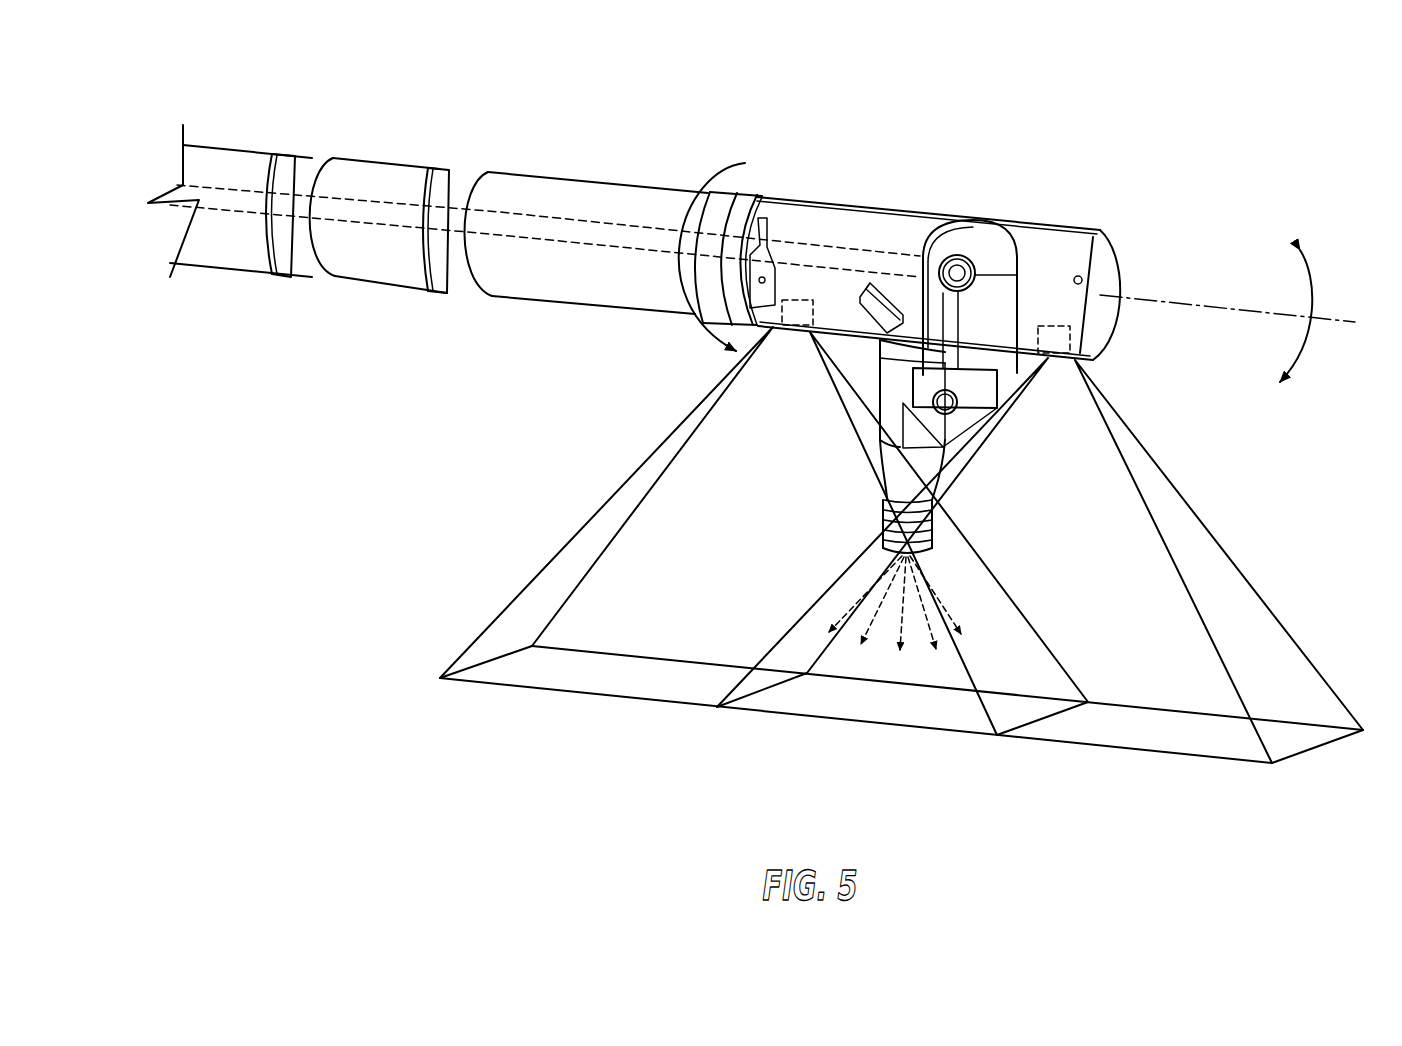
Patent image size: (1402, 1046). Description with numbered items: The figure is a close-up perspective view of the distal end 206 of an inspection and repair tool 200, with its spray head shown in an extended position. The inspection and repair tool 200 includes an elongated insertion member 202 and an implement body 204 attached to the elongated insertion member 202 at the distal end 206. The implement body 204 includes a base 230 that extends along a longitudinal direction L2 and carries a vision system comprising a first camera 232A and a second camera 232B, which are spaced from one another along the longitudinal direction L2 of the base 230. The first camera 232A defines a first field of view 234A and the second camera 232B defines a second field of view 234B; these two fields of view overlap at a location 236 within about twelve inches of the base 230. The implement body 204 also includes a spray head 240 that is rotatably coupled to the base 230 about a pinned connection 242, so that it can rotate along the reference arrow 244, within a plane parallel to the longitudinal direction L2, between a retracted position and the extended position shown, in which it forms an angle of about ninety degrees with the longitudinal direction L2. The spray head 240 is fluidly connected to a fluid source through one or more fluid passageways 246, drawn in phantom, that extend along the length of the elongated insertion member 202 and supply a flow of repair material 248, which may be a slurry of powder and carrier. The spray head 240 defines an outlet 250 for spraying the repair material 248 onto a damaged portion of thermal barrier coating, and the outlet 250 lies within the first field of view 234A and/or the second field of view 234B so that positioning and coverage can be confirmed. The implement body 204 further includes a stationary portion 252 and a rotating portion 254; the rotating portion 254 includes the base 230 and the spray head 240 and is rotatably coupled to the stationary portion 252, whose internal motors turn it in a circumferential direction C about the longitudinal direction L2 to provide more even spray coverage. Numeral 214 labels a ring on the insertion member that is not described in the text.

The inspection and repair tool 200 is at (1147, 97).
The elongated insertion member 202 is at (222, 312).
The implement body 204 is at (977, 254).
The distal end 206 is at (380, 312).
The coupling ring 214 is at (257, 147).
The base 230 is at (787, 194).
The first camera 232A is at (797, 330).
The second camera 232B is at (1062, 362).
The first field of view 234A is at (560, 545).
The second field of view 234B is at (1243, 588).
The location 236 is at (878, 511).
The spray head 240 is at (985, 397).
The pinned connection 242 is at (965, 268).
The reference arrow 244 is at (1308, 350).
The fluid passageways 246 is at (578, 223).
The repair material 248 is at (897, 637).
The outlet 250 is at (942, 548).
The stationary portion 252 is at (562, 298).
The rotating portion 254 is at (842, 225).
The circumferential direction C is at (745, 163).
The longitudinal direction L2 is at (1342, 317).